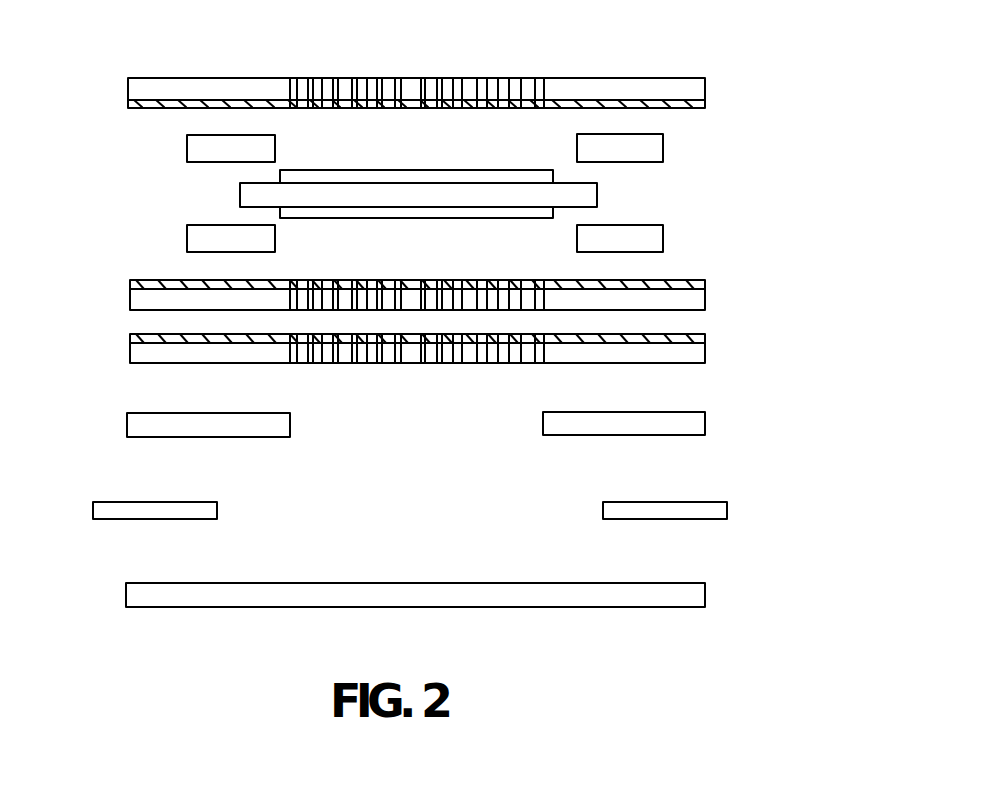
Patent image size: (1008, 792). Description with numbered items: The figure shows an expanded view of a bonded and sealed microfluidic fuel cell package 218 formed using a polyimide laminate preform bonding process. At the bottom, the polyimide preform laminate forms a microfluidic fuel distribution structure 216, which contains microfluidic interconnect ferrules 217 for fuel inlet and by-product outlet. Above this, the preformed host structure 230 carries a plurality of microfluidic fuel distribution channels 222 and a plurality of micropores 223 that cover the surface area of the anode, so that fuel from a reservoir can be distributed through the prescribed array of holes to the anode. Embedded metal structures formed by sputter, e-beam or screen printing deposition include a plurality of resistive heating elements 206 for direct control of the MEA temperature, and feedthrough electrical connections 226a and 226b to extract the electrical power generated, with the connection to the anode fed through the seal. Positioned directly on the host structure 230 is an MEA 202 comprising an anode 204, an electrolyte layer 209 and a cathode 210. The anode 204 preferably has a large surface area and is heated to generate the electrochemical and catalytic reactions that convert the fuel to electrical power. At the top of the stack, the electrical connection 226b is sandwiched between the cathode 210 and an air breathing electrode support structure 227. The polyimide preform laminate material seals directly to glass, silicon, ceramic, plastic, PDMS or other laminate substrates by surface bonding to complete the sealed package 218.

The MEA 202 is at (673, 162).
The anode 204 is at (470, 218).
The resistive heating elements 206 is at (664, 333).
The electrolyte layer 209 is at (378, 195).
The cathode 210 is at (445, 172).
The microfluidic fuel distribution structure 216 is at (87, 283).
The microfluidic interconnect ferrules 217 is at (144, 502).
The fuel cell package 218 is at (785, 60).
The microfluidic fuel distribution channels 222 is at (313, 364).
The micropores 223 is at (493, 280).
The feedthrough electrical connection 226a is at (158, 280).
The feedthrough electrical connection 226b is at (174, 107).
The air breathing electrode support structure 227 is at (561, 78).
The preformed host structure 230 is at (700, 266).